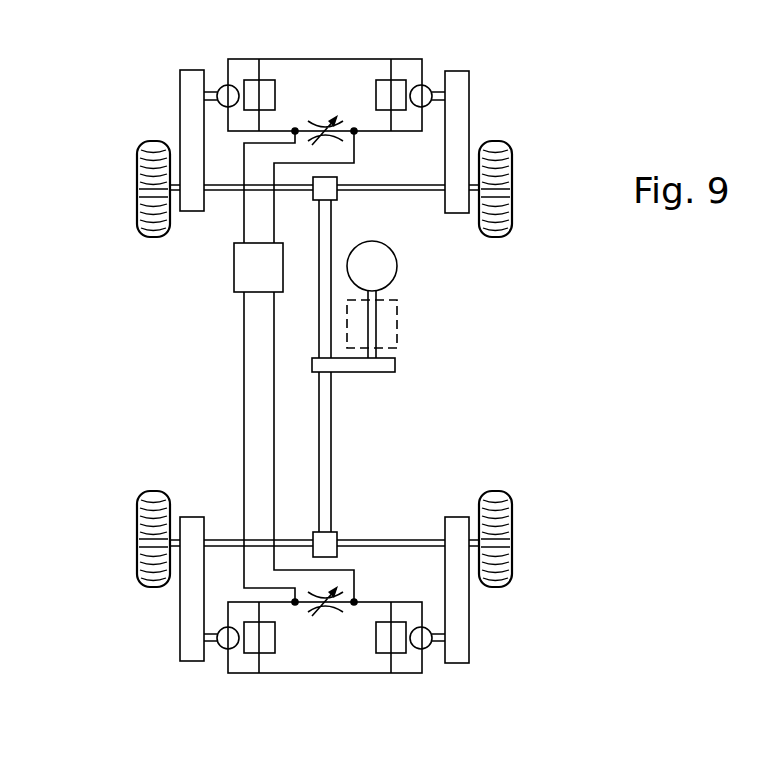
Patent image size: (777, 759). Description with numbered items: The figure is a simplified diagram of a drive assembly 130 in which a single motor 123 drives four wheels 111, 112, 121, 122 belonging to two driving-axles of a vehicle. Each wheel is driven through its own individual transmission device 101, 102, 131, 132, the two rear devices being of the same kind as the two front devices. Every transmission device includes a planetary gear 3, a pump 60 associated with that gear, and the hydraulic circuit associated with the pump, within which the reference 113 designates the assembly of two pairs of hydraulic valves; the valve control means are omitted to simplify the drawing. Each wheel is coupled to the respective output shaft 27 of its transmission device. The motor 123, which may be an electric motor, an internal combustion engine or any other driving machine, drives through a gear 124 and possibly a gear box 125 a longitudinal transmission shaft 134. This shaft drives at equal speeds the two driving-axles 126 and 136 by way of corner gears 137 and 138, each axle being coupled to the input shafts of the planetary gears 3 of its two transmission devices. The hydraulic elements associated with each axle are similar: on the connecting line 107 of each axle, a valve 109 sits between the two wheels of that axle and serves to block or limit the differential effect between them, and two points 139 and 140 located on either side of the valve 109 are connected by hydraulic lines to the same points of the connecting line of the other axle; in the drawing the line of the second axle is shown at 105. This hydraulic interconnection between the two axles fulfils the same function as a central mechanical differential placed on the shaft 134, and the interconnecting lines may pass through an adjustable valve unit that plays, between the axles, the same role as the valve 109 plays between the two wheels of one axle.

The planetary gear 3 is at (187, 105).
The output shaft 27 is at (174, 540).
The pump 60 is at (222, 88).
The transmission device 101 is at (142, 55).
The transmission device 102 is at (510, 55).
The rear hydraulic line 105 is at (383, 673).
The connecting line 107 is at (368, 133).
The valve 109 is at (331, 368).
The driving wheel 111 is at (143, 210).
The driving wheel 112 is at (505, 212).
The assembly of two pairs of hydraulic valves 113 is at (258, 90).
The wheel 121 is at (143, 515).
The wheel 122 is at (505, 518).
The motor 123 is at (385, 268).
The gear 124 is at (390, 367).
The gear box 125 is at (388, 331).
The driving-axle 126 is at (410, 191).
The drive assembly 130 is at (572, 352).
The transmission device 131 is at (142, 682).
The transmission device 132 is at (510, 682).
The longitudinal transmission shaft 134 is at (324, 433).
The driving-axle 136 is at (393, 540).
The corner gear 137 is at (331, 190).
The corner gear 138 is at (337, 535).
The point 139 is at (295, 128).
The point 140 is at (354, 128).